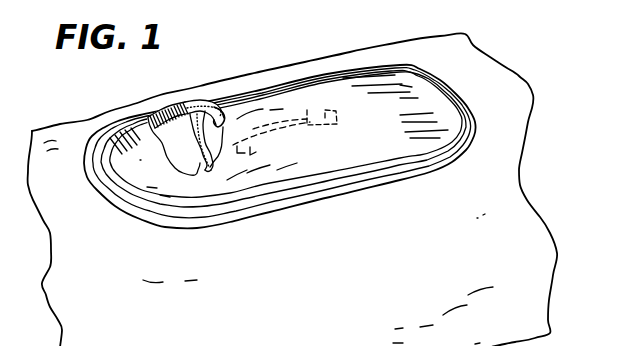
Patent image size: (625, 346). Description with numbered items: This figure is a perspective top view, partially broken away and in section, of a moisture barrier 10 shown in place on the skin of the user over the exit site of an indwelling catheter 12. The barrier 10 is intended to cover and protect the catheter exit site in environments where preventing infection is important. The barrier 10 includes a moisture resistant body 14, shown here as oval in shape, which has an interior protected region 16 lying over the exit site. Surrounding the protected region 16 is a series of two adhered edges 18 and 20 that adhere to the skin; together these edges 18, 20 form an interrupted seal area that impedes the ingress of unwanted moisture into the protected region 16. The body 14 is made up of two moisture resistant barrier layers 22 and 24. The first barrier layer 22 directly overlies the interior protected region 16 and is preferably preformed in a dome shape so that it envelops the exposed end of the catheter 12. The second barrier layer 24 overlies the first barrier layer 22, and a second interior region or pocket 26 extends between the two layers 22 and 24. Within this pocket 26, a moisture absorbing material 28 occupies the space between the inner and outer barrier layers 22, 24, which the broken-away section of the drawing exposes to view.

The moisture barrier 10 is at (302, 51).
The indwelling catheter 12 is at (310, 100).
The moisture resistant body 14 is at (417, 176).
The interior protected region 16 is at (184, 142).
The adhered edge 18 is at (188, 205).
The adhered edge 20 is at (140, 205).
The first moisture resistant barrier layer 22 is at (193, 165).
The second moisture resistant barrier layer 24 is at (208, 101).
The pocket 26 is at (216, 106).
The moisture absorbing material 28 is at (183, 103).